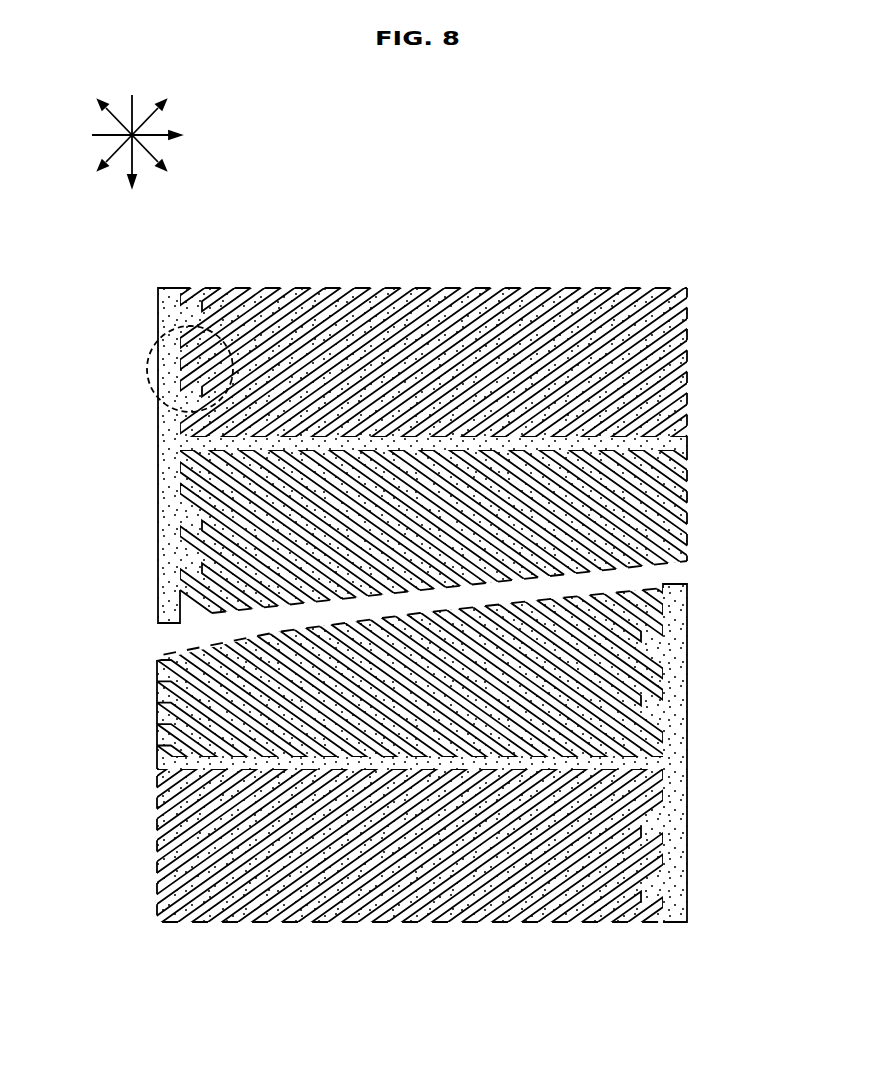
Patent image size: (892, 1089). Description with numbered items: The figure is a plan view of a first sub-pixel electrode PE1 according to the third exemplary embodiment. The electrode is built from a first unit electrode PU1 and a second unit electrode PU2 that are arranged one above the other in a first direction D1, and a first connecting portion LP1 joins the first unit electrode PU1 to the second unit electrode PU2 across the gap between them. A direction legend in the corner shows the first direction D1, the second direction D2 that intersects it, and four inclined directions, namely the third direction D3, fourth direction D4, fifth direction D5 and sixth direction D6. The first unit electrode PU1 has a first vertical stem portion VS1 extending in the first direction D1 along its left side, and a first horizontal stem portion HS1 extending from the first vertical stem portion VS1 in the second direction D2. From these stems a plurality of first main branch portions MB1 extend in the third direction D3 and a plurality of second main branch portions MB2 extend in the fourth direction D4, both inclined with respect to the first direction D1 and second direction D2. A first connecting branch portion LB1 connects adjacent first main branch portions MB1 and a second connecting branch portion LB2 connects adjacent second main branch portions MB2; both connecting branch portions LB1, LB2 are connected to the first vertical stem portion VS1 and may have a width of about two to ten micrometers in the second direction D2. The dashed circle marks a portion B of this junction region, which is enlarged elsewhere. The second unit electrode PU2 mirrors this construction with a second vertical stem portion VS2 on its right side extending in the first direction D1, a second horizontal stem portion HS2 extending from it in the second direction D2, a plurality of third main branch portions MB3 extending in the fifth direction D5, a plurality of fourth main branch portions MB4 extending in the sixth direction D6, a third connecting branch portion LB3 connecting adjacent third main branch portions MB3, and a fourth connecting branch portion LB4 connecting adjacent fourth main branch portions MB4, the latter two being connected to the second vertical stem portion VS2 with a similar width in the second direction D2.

The first sub-pixel electrode PE1 is at (267, 224).
The first unit electrode PU1 is at (76, 386).
The second unit electrode PU2 is at (755, 610).
The first vertical stem portion VS1 is at (168, 430).
The second vertical stem portion VS2 is at (677, 733).
The first horizontal stem portion HS1 is at (688, 443).
The second horizontal stem portion HS2 is at (158, 763).
The first connecting branch portion LB1 is at (187, 395).
The second connecting branch portion LB2 is at (195, 498).
The third connecting branch portion LB3 is at (650, 647).
The fourth connecting branch portion LB4 is at (647, 817).
The first main branch portions MB1 is at (222, 296).
The second main branch portions MB2 is at (187, 537).
The third main branch portions MB3 is at (630, 623).
The fourth main branch portions MB4 is at (623, 848).
The portion B is at (148, 352).
The first connecting portion LP1 is at (690, 578).
The first direction D1 is at (133, 153).
The second direction D2 is at (149, 135).
The third direction D3 is at (159, 106).
The fourth direction D4 is at (161, 165).
The fifth direction D5 is at (105, 106).
The sixth direction D6 is at (102, 163).